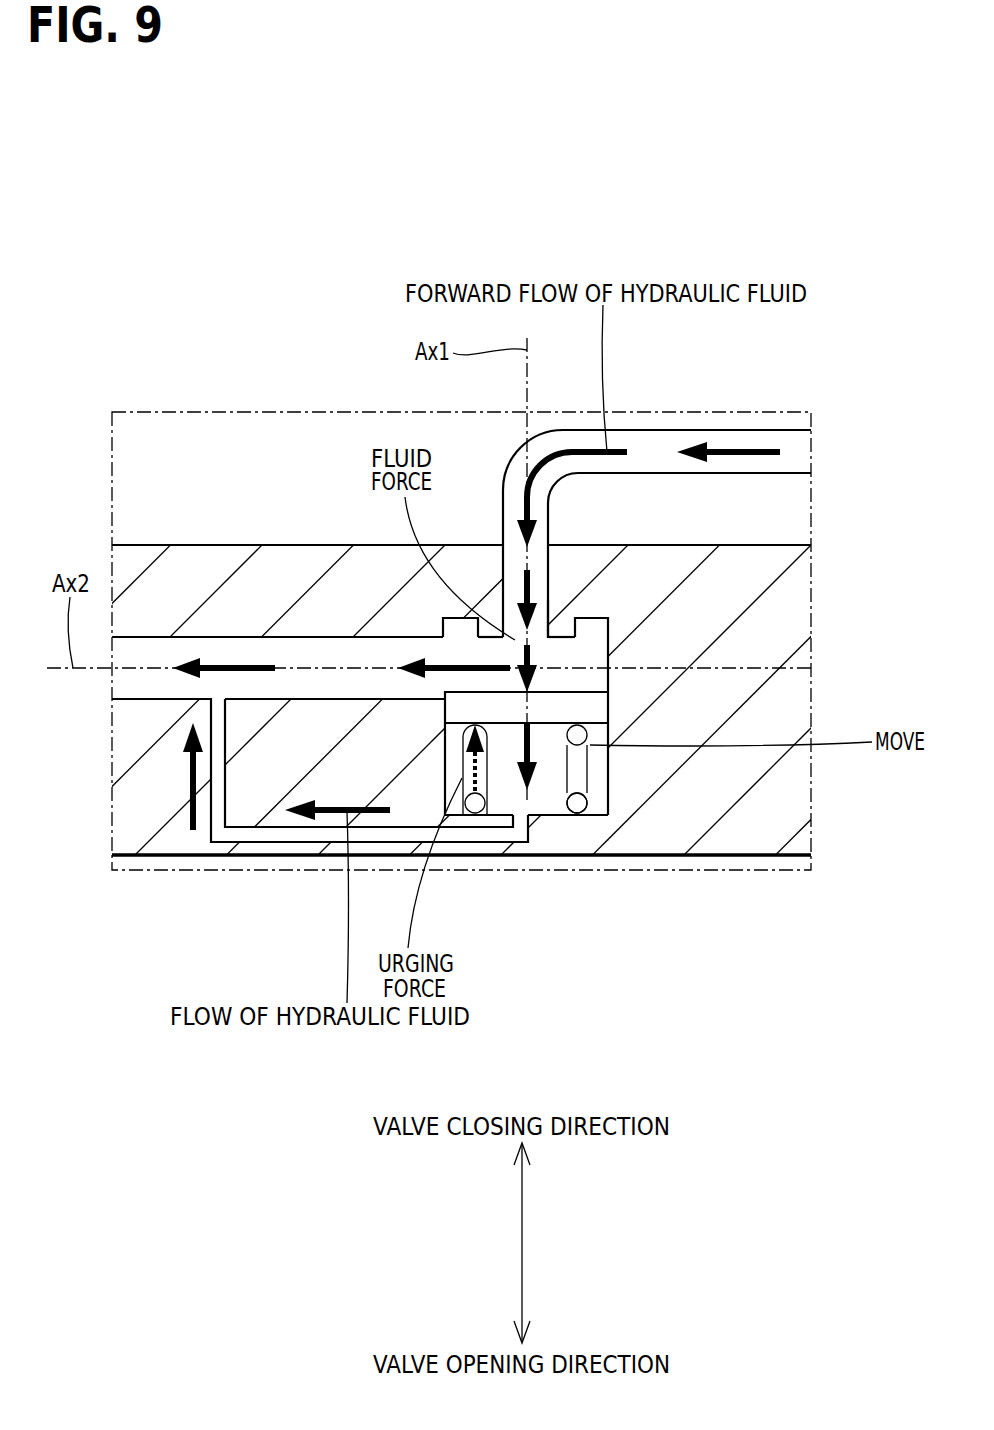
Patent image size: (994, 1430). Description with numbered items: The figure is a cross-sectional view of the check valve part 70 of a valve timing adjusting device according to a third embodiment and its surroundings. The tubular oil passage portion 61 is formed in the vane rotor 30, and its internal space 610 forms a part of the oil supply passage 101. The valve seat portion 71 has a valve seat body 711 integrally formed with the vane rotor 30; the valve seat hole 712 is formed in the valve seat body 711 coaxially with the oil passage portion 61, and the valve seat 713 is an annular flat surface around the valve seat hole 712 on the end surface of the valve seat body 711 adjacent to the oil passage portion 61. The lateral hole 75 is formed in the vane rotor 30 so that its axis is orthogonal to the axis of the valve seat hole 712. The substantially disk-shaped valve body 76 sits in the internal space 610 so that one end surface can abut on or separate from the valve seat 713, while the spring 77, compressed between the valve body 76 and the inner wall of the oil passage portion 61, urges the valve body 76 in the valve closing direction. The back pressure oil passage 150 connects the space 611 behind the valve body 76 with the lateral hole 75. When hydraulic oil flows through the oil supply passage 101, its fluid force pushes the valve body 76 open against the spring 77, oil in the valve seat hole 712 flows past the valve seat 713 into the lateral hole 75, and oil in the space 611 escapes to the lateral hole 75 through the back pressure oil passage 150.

The oil supply passage 101 is at (760, 430).
The lateral hole 75 is at (318, 655).
The valve seat hole 712 is at (527, 645).
The valve seat portion 71 is at (558, 602).
The valve seat body 711 is at (573, 633).
The valve seat 713 is at (560, 643).
The check valve part 70 is at (635, 683).
The valve body 76 is at (595, 715).
The spring 77 is at (590, 777).
The back pressure oil passage 150 is at (310, 833).
The space 611 is at (503, 760).
The oil passage portion 61 is at (587, 792).
The internal space 610 is at (547, 797).
The vane rotor 30 is at (748, 835).